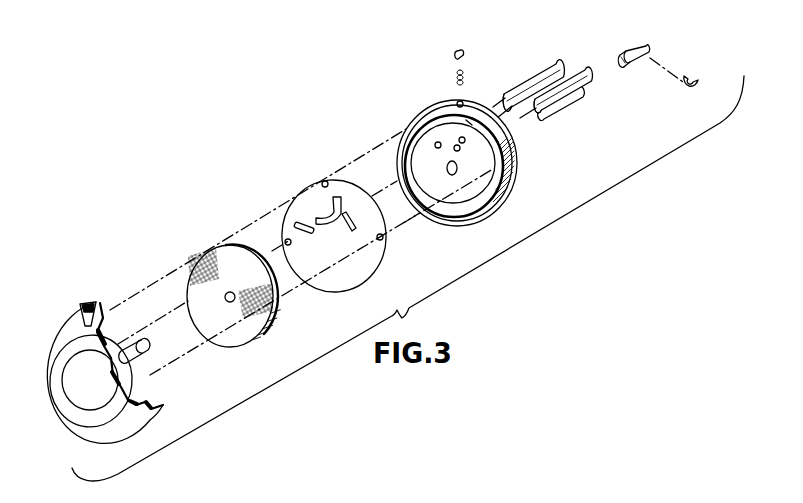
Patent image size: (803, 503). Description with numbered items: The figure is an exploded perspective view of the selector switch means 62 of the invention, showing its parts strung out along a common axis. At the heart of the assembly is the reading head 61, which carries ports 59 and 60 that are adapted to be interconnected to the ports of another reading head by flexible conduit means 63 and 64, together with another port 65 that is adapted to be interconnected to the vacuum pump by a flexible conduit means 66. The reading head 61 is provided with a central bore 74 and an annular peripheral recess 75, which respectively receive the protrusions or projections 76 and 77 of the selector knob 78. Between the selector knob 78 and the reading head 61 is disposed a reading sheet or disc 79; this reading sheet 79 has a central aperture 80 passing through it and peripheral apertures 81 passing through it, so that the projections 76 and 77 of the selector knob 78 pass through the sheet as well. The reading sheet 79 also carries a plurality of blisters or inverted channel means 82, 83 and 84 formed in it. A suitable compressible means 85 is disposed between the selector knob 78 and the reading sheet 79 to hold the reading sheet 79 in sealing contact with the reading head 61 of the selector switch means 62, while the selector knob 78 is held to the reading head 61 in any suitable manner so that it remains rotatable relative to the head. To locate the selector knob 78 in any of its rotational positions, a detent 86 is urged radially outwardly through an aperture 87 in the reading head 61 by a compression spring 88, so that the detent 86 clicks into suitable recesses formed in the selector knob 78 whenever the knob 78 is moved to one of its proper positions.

The port 59 is at (465, 140).
The port 60 is at (435, 144).
The reading head 61 is at (482, 193).
The selector switch means 62 is at (296, 103).
The flexible conduit means 63 is at (578, 72).
The flexible conduit means 64 is at (533, 83).
The port 65 is at (458, 149).
The flexible conduit means 66 is at (570, 95).
The central bore 74 is at (452, 176).
The annular peripheral recess 75 is at (469, 122).
The projection 76 is at (146, 358).
The projection 77 is at (103, 309).
The selector knob 78 is at (87, 418).
The reading sheet 79 is at (367, 270).
The central aperture 80 is at (327, 250).
The peripheral aperture 81 is at (325, 181).
The blister 82 is at (356, 220).
The blister 83 is at (316, 212).
The blister 84 is at (302, 222).
The compressible means 85 is at (218, 262).
The detent 86 is at (456, 53).
The aperture 87 is at (457, 102).
The compression spring 88 is at (468, 70).